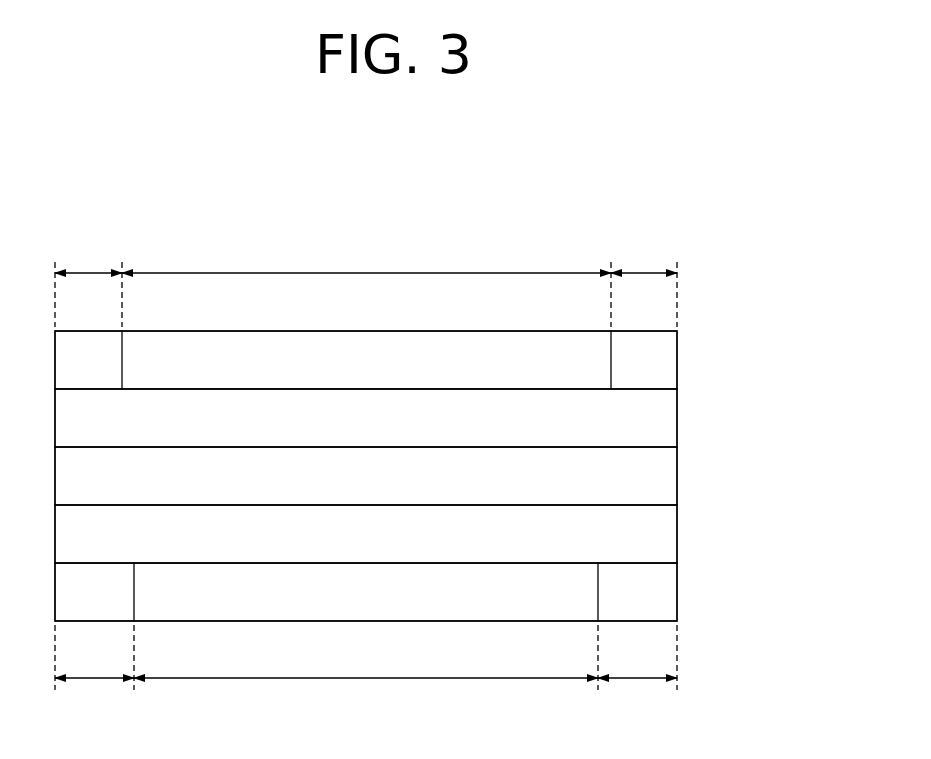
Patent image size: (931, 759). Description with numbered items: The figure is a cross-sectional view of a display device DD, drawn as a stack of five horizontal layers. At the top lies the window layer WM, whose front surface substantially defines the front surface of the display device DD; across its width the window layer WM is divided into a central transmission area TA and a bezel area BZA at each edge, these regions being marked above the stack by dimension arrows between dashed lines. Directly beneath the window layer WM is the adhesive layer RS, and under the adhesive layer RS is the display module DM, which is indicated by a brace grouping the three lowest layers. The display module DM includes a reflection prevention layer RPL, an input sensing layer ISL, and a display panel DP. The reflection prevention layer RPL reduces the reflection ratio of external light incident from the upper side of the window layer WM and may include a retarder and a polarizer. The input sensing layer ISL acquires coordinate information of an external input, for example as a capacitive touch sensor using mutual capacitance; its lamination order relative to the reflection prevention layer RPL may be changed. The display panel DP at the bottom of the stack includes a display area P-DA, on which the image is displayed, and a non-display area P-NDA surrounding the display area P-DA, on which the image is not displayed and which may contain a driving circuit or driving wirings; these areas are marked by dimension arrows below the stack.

The display device DD is at (661, 221).
The window layer WM is at (668, 359).
The adhesive layer RS is at (668, 417).
The reflection prevention layer RPL is at (668, 475).
The input sensing layer ISL is at (668, 534).
The display panel DP is at (405, 592).
The display module DM is at (436, 534).
The bezel area BZA is at (366, 284).
The transmission area TA is at (366, 257).
The non-display area P-NDA is at (366, 669).
The display area P-DA is at (366, 696).